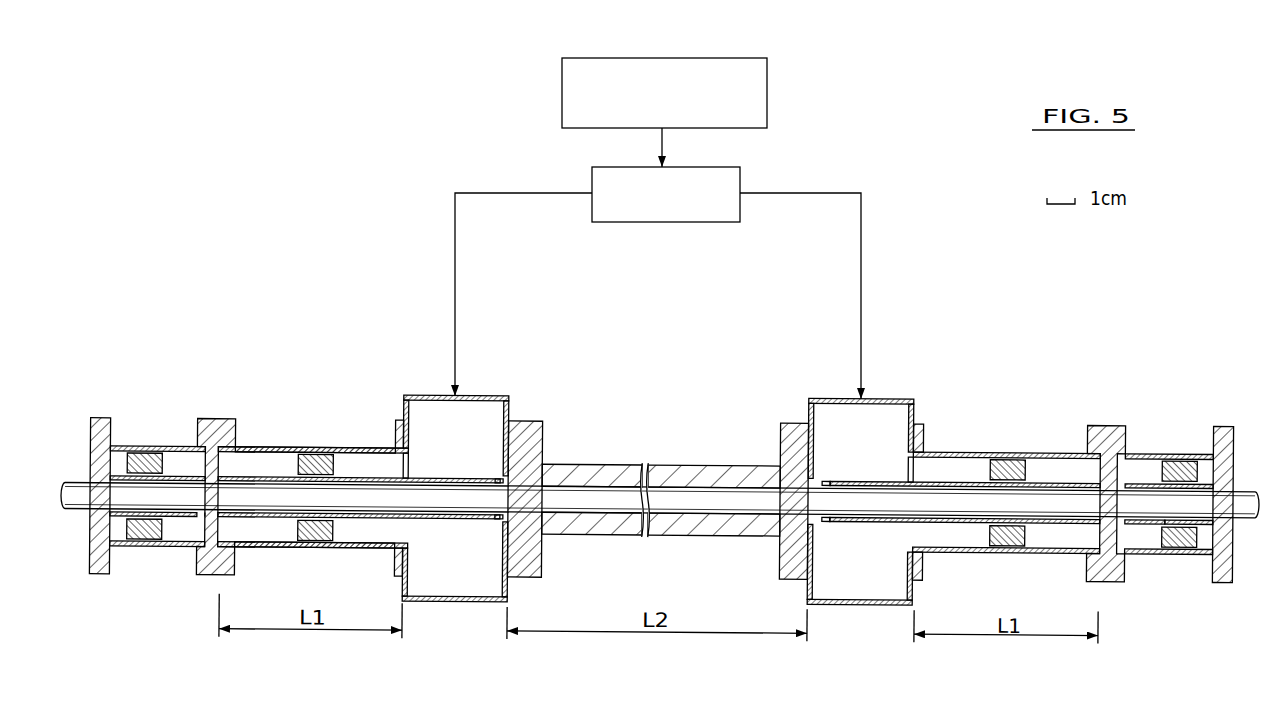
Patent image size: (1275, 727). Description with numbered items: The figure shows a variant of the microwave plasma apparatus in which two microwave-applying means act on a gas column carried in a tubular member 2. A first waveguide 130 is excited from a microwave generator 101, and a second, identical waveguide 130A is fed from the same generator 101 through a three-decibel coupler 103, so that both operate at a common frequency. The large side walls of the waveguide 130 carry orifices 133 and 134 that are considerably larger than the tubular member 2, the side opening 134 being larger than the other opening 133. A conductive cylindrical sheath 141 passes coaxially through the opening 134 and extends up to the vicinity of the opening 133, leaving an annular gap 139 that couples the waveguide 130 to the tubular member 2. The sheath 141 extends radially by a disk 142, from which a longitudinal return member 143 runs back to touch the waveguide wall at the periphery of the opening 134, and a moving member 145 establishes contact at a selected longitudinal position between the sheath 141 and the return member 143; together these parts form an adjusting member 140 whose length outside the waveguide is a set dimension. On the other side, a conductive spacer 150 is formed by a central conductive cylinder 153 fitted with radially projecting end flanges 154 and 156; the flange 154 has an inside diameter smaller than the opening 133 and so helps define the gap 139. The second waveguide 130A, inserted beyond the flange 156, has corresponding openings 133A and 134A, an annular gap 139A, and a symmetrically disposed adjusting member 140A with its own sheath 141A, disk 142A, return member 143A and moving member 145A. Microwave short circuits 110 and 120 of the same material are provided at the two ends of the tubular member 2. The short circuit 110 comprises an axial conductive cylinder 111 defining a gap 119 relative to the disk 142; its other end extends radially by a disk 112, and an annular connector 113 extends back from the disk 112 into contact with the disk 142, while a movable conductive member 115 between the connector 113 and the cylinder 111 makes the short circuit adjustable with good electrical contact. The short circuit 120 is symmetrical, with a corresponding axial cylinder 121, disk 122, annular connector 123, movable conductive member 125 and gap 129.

The tubular member 2 is at (82, 486).
The microwave generator 101 is at (655, 58).
The 3 dB coupler 103 is at (660, 222).
The microwave short circuit 110 is at (156, 443).
The axial conductive cylinder 111 is at (118, 533).
The disk 112 is at (87, 427).
The annular connector 113 is at (122, 445).
The conductive member 115 is at (148, 541).
The gap 119 is at (200, 521).
The microwave short circuit 120 is at (1151, 446).
The axial conductive cylinder 121 is at (1213, 557).
The disk 122 is at (1233, 455).
The annular connector 123 is at (1200, 452).
The conductive member 125 is at (1180, 544).
The gap 129 is at (1122, 532).
The microwave-applying means 130 is at (473, 392).
The second microwave-applying means 130A is at (890, 393).
The orifice 133 is at (496, 467).
The orifice 133A is at (823, 481).
The side opening 134 is at (404, 470).
The side opening 134A is at (927, 474).
The annular gap 139 is at (500, 522).
The annular gap 139A is at (817, 523).
The adjusting member 140 is at (295, 444).
The adjusting member 140A is at (967, 446).
The conductive cylindrical sheath 141 is at (260, 521).
The conductive cylindrical sheath 141A is at (895, 522).
The disk 142 is at (217, 418).
The disk 142A is at (1108, 427).
The longitudinal return member 143 is at (350, 450).
The longitudinal return member 143A is at (1045, 452).
The moving member 145 is at (318, 544).
The moving member 145A is at (1009, 548).
The conductive spacer 150 is at (678, 460).
The central conductive cylinder 153 is at (590, 478).
The end flange 154 is at (530, 420).
The end flange 156 is at (793, 437).